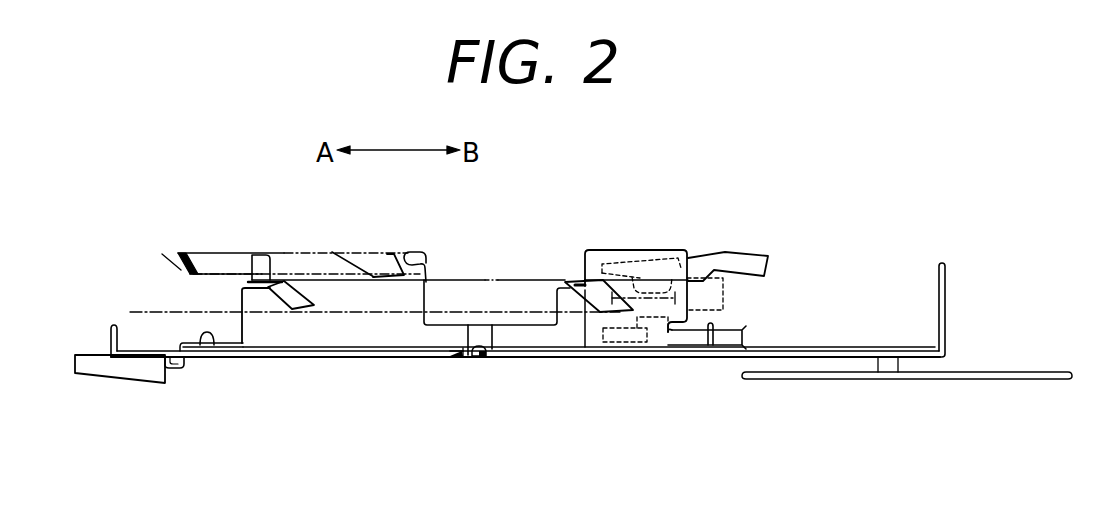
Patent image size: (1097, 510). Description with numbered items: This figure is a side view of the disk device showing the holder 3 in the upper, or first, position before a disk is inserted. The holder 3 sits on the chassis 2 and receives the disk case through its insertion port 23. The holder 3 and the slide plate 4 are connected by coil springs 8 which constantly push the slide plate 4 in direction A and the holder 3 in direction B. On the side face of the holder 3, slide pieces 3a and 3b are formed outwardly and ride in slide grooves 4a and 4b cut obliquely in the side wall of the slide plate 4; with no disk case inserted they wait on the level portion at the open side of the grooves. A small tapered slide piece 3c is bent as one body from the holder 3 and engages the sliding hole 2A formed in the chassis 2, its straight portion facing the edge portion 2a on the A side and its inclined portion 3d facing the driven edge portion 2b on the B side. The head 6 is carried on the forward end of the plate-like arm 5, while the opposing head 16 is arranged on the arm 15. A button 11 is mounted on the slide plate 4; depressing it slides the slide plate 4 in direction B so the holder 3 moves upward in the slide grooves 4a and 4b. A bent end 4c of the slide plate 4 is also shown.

The chassis 2 is at (303, 358).
The sliding hole 2A is at (463, 360).
The edge portion 2a is at (450, 358).
The edge portion 2b is at (488, 356).
The holder 3 is at (450, 279).
The slide piece 3a is at (255, 264).
The slide piece 3b is at (568, 282).
The slide piece 3c is at (462, 329).
The inclined portion 3d is at (470, 345).
The slide plate 4 is at (357, 332).
The slide groove 4a is at (268, 303).
The slide groove 4b is at (583, 340).
The leaf spring bent end 4c is at (205, 346).
The arm 5 is at (743, 258).
The head 6 is at (652, 277).
The coil spring 8 is at (212, 250).
The button 11 is at (113, 378).
The arm 15 is at (735, 332).
The head 16 is at (655, 312).
The insertion port 23 is at (166, 293).